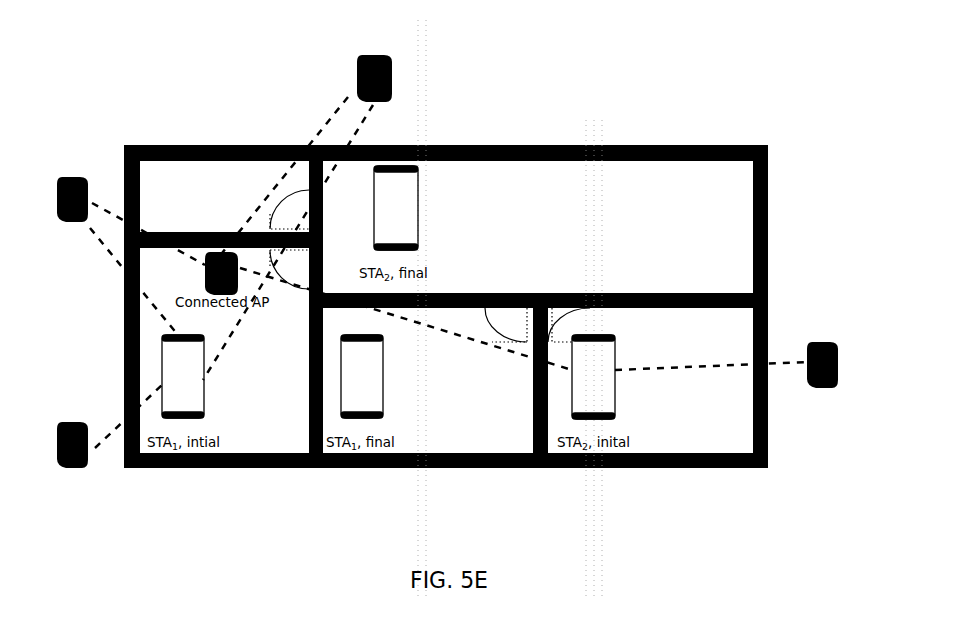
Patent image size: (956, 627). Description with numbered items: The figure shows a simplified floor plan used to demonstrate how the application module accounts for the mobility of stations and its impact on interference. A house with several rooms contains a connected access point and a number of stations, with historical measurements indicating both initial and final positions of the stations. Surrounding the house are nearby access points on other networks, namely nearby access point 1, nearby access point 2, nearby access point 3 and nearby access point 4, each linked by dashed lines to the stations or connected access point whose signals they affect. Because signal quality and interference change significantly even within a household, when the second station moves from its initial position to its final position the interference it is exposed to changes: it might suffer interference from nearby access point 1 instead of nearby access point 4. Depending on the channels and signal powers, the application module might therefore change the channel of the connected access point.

The nearby access point AP1 1 is at (372, 96).
The nearby access point AP2 2 is at (72, 217).
The nearby access point AP3 3 is at (72, 462).
The nearby access point AP4 4 is at (822, 382).